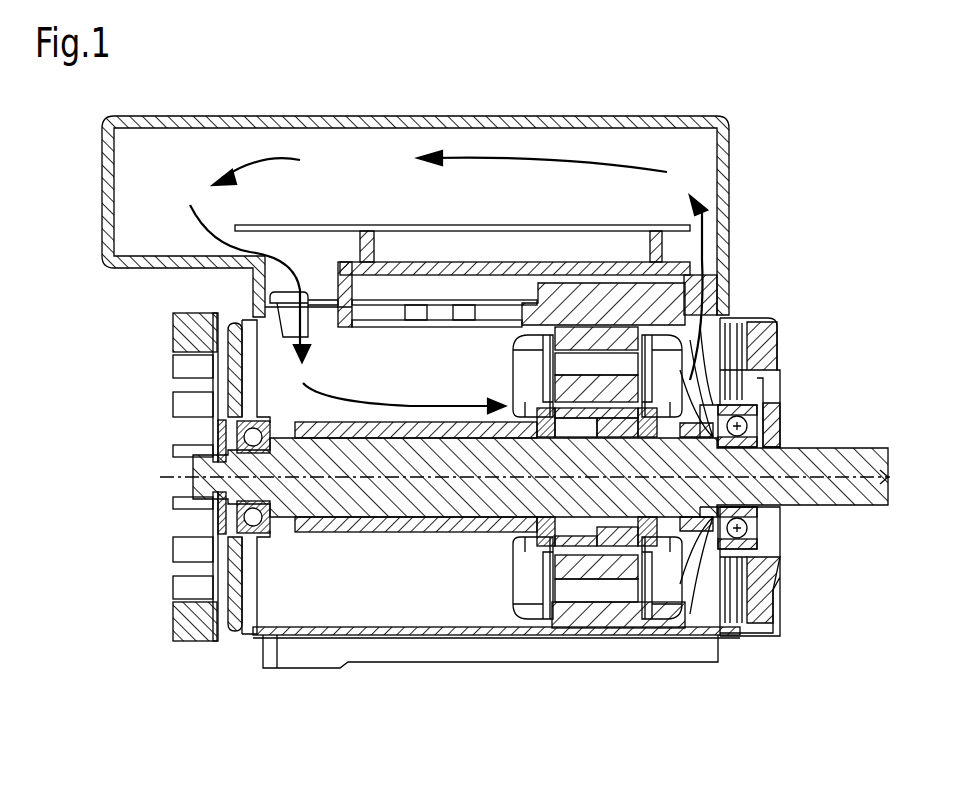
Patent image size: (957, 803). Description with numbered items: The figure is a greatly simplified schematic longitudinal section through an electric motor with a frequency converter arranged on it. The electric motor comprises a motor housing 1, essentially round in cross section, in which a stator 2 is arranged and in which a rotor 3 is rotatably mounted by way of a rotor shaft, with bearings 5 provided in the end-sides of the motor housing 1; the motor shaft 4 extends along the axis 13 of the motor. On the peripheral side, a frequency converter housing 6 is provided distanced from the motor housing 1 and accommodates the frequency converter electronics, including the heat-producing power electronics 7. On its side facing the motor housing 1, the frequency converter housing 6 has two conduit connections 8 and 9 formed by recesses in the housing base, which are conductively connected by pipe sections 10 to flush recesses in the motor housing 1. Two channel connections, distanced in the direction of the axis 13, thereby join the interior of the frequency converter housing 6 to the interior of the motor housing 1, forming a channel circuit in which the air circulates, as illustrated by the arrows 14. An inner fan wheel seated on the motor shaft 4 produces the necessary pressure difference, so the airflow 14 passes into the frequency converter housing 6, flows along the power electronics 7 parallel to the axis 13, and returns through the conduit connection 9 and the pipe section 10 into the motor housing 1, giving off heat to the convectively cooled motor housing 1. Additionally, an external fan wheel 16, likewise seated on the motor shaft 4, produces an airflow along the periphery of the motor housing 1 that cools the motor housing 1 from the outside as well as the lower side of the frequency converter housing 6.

The motor housing 1 is at (435, 630).
The stator 2 is at (578, 615).
The rotor 3 is at (613, 555).
The motor shaft 4 is at (850, 493).
The bearings 5 is at (233, 427).
The frequency converter housing 6 is at (728, 137).
The power electronics 7 is at (448, 223).
The conduit connection 8 is at (707, 300).
The conduit connection 9 is at (312, 312).
The pipe sections 10 is at (352, 258).
The axis of the motor 13 is at (173, 477).
The arrows / airflow 14 is at (263, 157).
The external fan wheel 16 is at (172, 612).